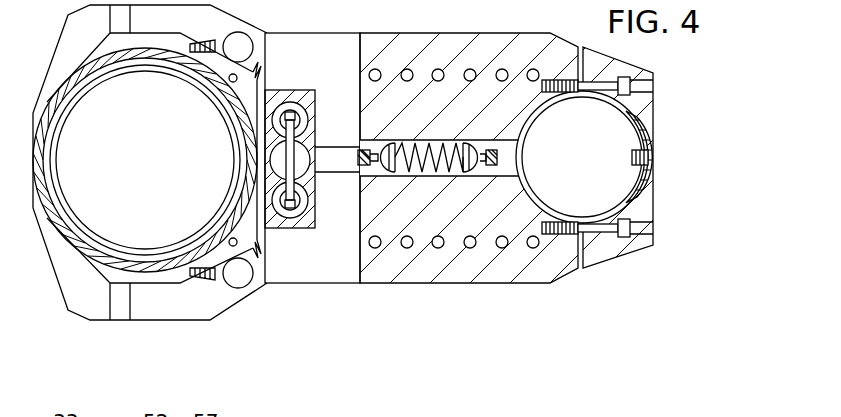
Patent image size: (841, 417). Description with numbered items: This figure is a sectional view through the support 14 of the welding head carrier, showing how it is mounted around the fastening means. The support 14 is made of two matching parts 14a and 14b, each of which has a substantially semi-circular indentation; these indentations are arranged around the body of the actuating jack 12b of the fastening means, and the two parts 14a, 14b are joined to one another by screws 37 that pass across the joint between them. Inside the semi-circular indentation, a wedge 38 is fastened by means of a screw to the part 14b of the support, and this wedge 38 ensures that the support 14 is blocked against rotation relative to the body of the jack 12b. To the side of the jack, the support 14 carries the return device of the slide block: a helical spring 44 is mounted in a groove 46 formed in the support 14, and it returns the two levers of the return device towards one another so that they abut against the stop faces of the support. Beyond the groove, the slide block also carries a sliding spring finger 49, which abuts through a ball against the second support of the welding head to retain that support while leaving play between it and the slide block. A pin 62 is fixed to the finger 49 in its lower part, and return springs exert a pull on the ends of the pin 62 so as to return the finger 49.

The actuating jack 12b is at (607, 187).
The support 14 is at (475, 179).
The first matching part of the support 14a is at (520, 268).
The second matching part of the support 14b is at (597, 253).
The screws 37 is at (623, 237).
The wedge 38 is at (645, 140).
The helical spring 44 is at (440, 138).
The groove 46 is at (414, 176).
The sliding spring finger 49 is at (305, 172).
The pin 62 is at (310, 138).